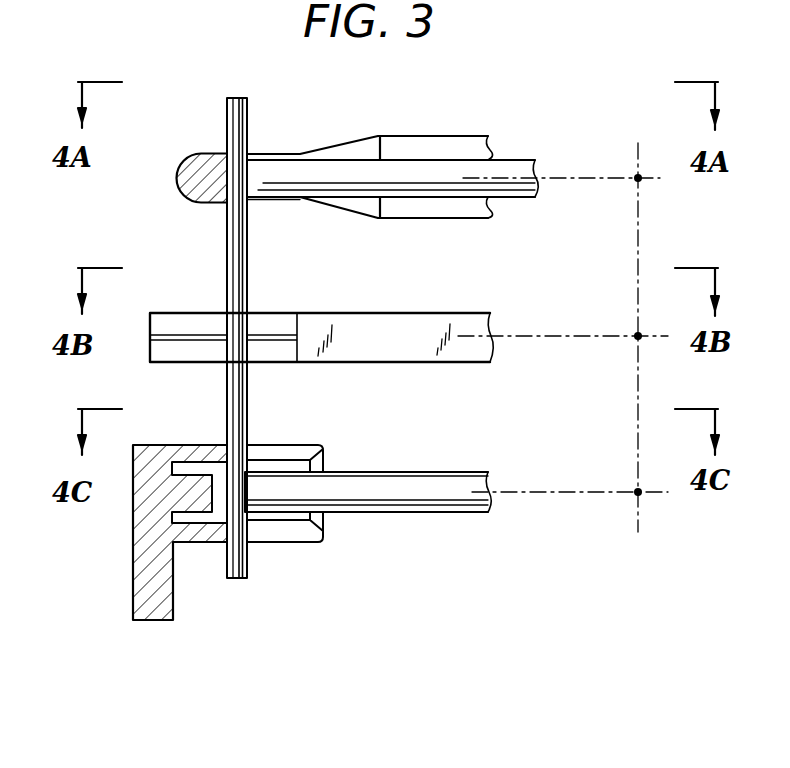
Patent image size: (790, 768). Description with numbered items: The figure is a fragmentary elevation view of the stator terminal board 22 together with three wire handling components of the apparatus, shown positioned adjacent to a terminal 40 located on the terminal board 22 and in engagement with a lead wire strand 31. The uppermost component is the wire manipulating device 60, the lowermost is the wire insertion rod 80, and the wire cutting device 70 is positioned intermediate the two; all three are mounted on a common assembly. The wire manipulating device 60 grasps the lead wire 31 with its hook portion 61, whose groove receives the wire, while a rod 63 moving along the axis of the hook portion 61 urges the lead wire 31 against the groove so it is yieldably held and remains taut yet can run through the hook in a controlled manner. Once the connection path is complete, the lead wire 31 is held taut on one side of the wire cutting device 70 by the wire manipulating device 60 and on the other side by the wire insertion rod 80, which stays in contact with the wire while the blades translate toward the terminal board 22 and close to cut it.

The terminal board 22 is at (150, 620).
The lead wire strand 31 is at (248, 107).
The terminal 40 is at (323, 531).
The wire manipulating device 60 is at (488, 137).
The hook portion 61 is at (188, 155).
The rod 63 is at (510, 188).
The wire cutting device 70 is at (492, 313).
The wire insertion rod 80 is at (488, 472).